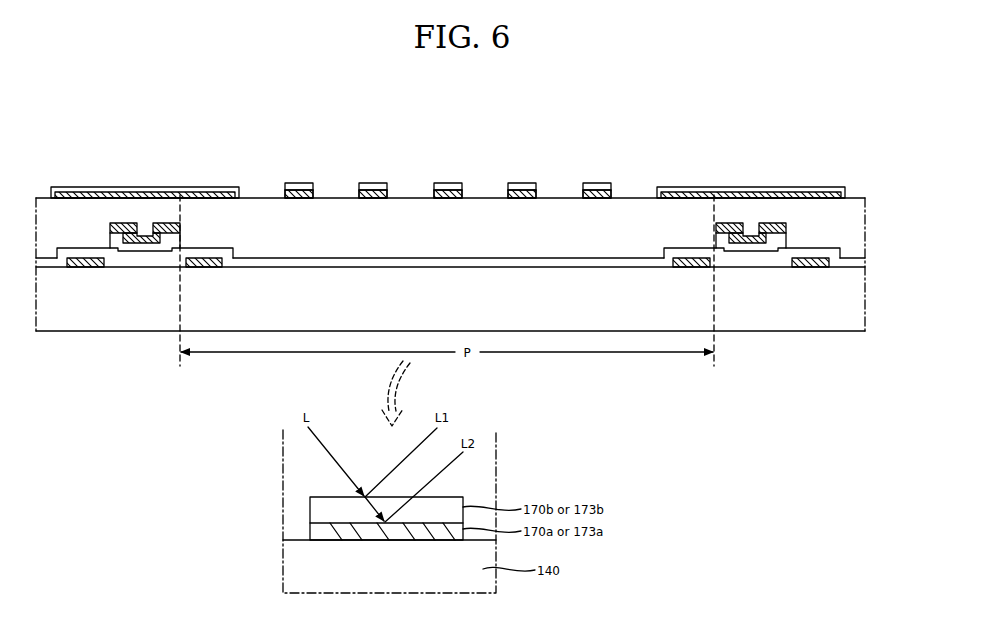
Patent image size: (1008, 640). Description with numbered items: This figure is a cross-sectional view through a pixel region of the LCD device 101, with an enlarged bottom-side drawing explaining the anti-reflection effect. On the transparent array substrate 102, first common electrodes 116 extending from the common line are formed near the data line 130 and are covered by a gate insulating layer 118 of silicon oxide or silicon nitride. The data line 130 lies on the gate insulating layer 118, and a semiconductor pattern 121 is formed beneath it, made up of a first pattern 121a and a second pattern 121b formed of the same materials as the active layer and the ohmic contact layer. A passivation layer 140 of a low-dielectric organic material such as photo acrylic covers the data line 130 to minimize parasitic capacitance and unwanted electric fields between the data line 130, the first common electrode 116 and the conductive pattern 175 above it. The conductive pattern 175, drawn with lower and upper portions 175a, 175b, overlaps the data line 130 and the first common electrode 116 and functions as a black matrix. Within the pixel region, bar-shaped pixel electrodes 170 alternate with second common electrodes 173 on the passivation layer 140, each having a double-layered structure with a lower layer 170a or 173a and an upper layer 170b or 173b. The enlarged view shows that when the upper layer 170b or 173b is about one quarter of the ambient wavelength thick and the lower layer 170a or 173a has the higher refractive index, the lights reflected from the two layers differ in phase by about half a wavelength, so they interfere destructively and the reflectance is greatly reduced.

The LCD device 101 is at (843, 118).
The array substrate 102 is at (856, 322).
The first common electrode 116 is at (87, 268).
The gate insulating layer 118 is at (414, 264).
The semiconductor pattern 121 is at (449, 279).
The first pattern 121a is at (132, 252).
The second pattern 121b is at (152, 244).
The data line 130 is at (158, 224).
The passivation layer 140 is at (488, 254).
The pixel electrode 170 is at (324, 131).
The lower layer 170a is at (306, 193).
The upper layer 170b is at (297, 187).
The second common electrode 173 is at (398, 131).
The lower layer 173a is at (380, 193).
The upper layer 173b is at (371, 187).
The conductive pattern 175 is at (448, 156).
The pixel electrode lower layer 175a is at (115, 194).
The pixel electrode upper layer 175b is at (91, 187).